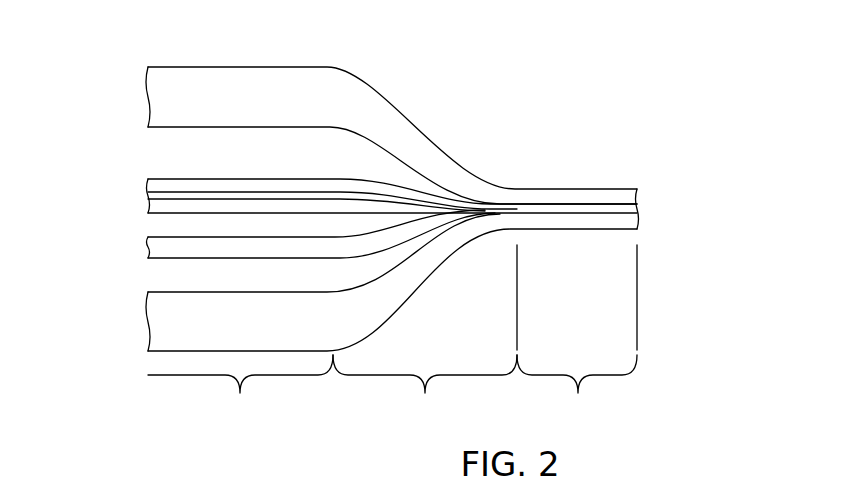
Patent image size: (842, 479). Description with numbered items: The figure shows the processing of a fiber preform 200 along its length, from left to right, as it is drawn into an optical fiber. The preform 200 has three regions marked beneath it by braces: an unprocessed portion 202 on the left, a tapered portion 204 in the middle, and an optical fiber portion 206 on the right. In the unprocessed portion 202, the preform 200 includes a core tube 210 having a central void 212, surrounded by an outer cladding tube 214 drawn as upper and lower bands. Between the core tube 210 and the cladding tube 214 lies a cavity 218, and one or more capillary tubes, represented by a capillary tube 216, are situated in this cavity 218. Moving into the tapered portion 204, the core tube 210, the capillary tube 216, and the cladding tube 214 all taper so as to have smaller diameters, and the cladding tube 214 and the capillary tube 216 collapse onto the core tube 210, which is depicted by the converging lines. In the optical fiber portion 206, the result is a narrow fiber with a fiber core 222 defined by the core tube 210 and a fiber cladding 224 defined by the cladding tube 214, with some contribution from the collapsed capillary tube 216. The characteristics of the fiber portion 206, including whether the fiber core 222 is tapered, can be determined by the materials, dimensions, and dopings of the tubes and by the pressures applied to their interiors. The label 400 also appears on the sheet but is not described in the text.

The fiber preform 200 is at (492, 115).
The unprocessed portion 202 is at (240, 390).
The tapered portion 204 is at (425, 337).
The optical fiber portion 206 is at (577, 337).
The core tube 210 is at (142, 165).
The central void 212 is at (148, 194).
The cladding tube 214 is at (254, 90).
The capillary tube 216 is at (157, 249).
The cavity 218 is at (277, 143).
The fiber core 222 is at (634, 205).
The fiber cladding 224 is at (567, 187).
The sheet designation 400 is at (686, 469).